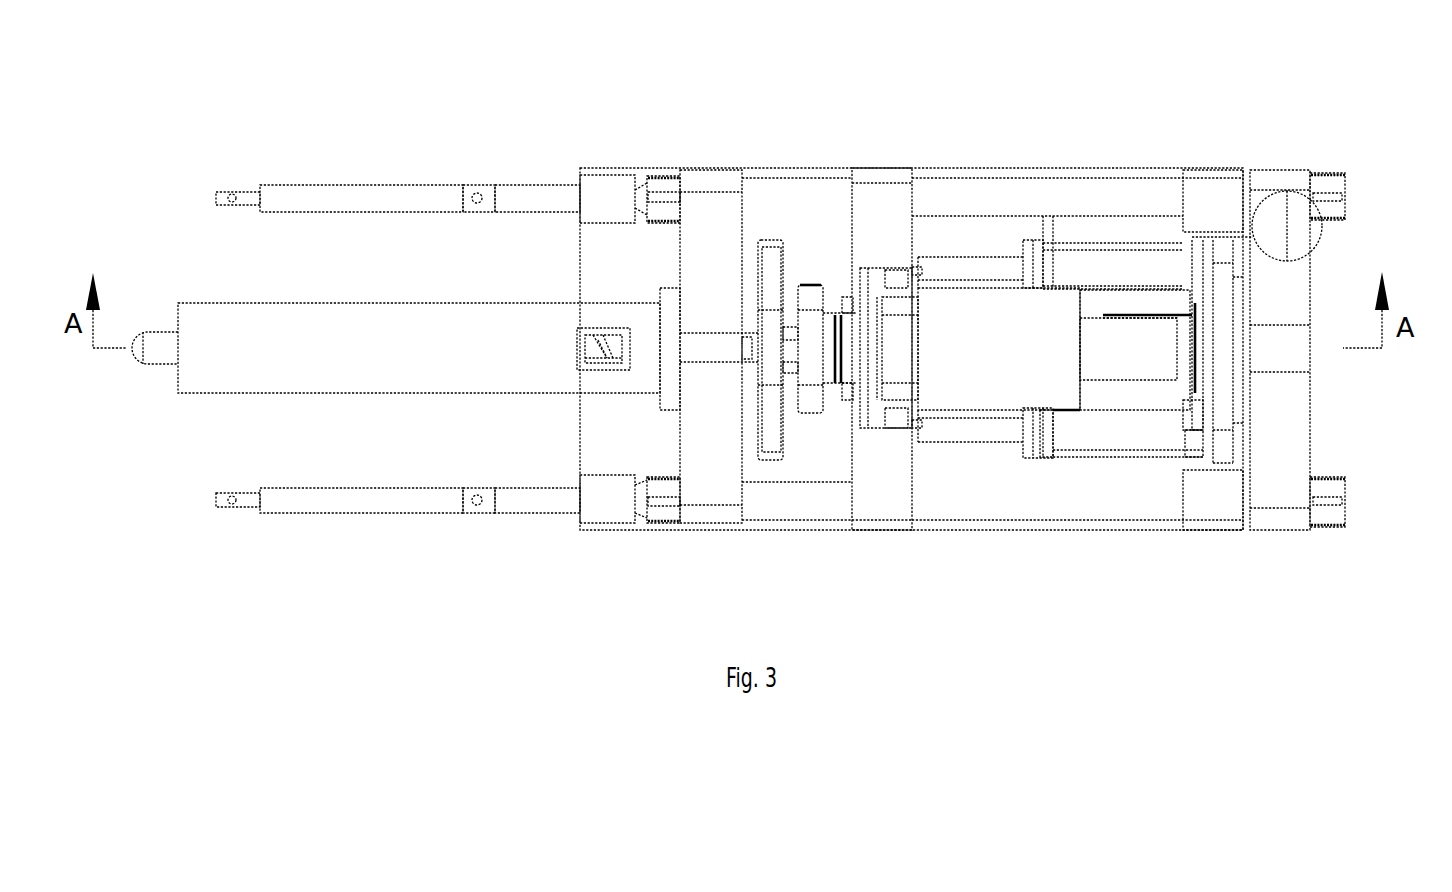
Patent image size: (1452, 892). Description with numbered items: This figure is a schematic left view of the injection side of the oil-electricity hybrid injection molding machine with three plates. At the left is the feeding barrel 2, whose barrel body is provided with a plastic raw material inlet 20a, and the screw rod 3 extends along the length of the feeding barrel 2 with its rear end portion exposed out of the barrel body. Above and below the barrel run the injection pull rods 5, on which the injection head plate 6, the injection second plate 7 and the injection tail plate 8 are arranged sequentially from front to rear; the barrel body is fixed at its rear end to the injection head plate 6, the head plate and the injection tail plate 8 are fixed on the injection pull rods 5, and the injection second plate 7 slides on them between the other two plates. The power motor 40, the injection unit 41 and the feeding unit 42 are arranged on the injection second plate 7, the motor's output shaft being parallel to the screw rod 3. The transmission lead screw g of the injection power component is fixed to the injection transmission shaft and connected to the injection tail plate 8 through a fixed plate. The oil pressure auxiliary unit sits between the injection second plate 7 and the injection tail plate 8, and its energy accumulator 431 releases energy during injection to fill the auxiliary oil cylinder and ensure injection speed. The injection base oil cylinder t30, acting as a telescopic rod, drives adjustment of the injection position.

The feeding barrel 2 is at (192, 272).
The injection base oil cylinder t30 is at (347, 195).
The injection pull rod 5 is at (546, 195).
The plastic raw material inlet 20a is at (575, 345).
The screw rod 3 is at (606, 345).
The injection head plate 6 is at (707, 205).
The injection second plate 7 is at (881, 200).
The feeding unit 42 is at (769, 218).
The injection unit 41 is at (813, 262).
The power motor 40 is at (1008, 340).
The transmission lead screw g is at (1118, 358).
The injection tail plate 8 is at (1280, 185).
The energy accumulator 431 is at (1308, 237).